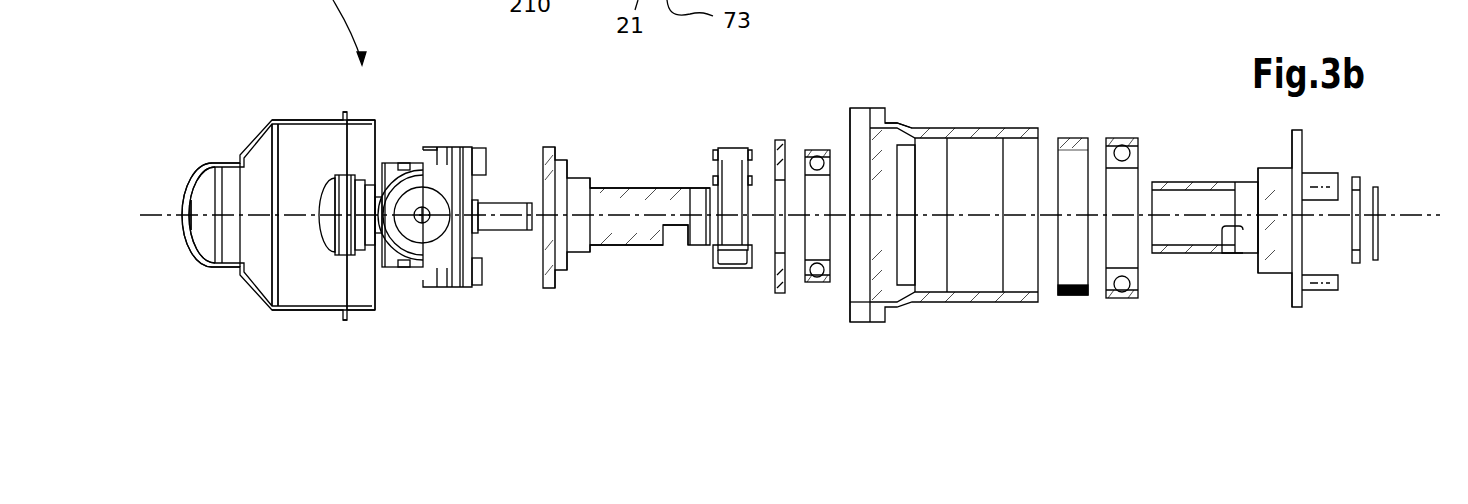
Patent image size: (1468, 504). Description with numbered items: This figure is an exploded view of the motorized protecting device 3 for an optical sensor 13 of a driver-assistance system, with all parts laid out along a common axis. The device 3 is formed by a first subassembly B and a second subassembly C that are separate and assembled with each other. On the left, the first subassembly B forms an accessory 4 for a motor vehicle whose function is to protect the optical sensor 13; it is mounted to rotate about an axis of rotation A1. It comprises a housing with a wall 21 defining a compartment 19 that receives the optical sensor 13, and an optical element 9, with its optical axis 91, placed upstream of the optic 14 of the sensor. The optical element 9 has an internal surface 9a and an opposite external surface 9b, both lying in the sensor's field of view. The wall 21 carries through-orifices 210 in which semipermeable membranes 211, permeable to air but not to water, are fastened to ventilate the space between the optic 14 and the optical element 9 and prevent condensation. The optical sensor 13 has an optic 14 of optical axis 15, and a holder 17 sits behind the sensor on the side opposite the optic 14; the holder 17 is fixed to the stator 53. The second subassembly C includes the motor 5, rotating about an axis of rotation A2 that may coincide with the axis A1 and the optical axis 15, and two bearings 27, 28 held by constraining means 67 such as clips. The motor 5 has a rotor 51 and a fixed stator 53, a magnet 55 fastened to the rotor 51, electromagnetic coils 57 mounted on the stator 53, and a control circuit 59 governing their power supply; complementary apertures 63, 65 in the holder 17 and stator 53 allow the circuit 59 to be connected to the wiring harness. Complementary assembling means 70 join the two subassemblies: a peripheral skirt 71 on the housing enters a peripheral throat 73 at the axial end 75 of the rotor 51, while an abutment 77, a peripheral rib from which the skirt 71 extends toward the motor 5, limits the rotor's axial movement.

The protecting device 3 is at (661, 150).
The accessory 4 is at (206, 80).
The motor 5 is at (1107, 108).
The optical element 9 is at (189, 229).
The internal surface 9a is at (223, 247).
The external surface 9b is at (197, 187).
The optical sensor 13 is at (453, 290).
The optic 14 is at (320, 203).
The optical axis 15 is at (160, 210).
The optical axis 91 is at (139, 187).
The holder 17 is at (613, 243).
The compartment 19 is at (343, 280).
The wall 21 is at (243, 287).
The bearing 27 is at (823, 150).
The bearing 28 is at (1132, 138).
The rotor 51 is at (897, 124).
The stator 53 is at (1203, 182).
The magnet 55 is at (1070, 298).
The electromagnetic coils 57 is at (730, 157).
The control circuit 59 is at (773, 278).
The aperture 63 is at (1235, 247).
The aperture 65 is at (672, 242).
The constraining means 67 is at (1367, 185).
The complementary assembling means 70 is at (870, 108).
The peripheral skirt 71 is at (357, 115).
The peripheral throat 73 is at (858, 311).
The end 75 is at (842, 301).
The abutment 77 is at (345, 110).
The through-orifice 210 is at (297, 118).
The semipermeable membrane 211 is at (306, 118).
The first subassembly B is at (189, 284).
The second subassembly C is at (1015, 88).
The axis of rotation A1 is at (1413, 217).
The axis of rotation A2 is at (1412, 288).